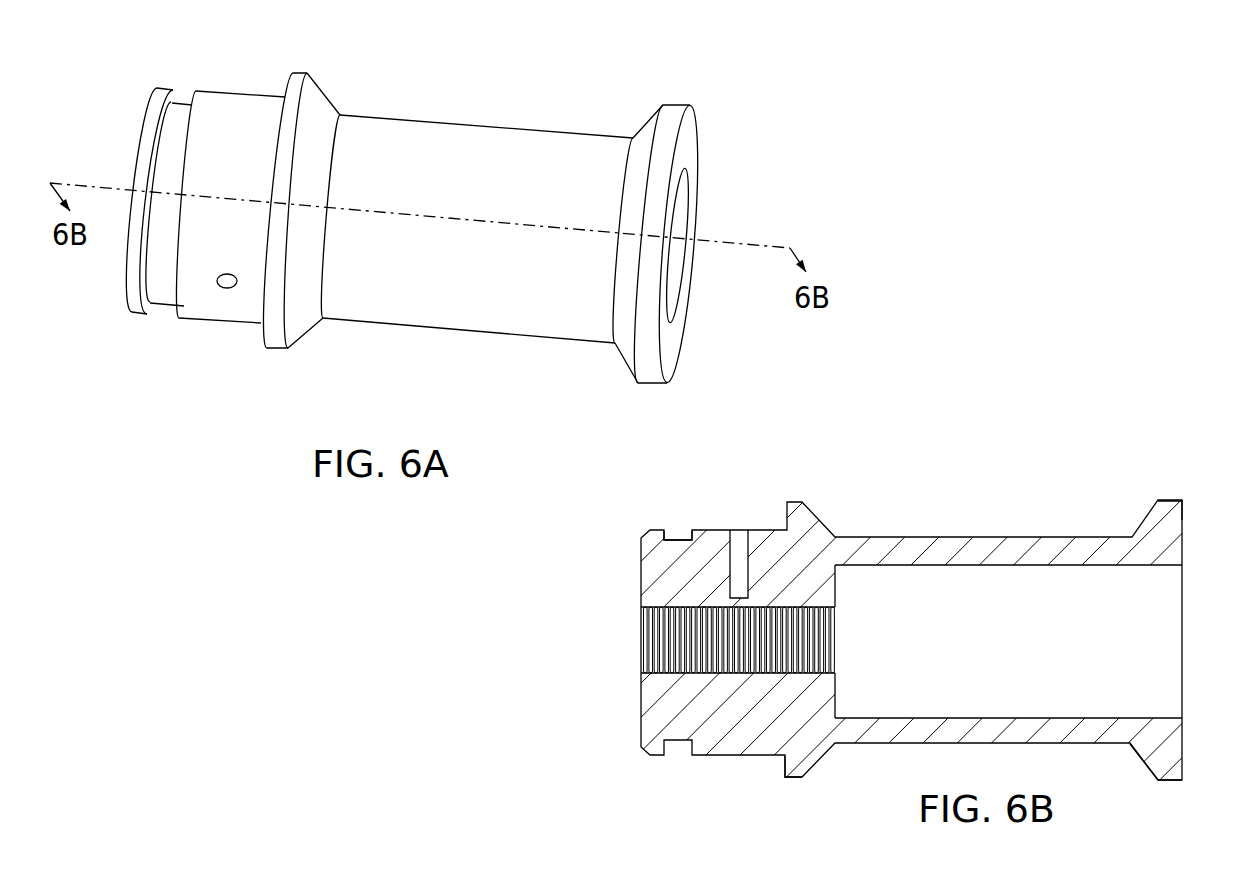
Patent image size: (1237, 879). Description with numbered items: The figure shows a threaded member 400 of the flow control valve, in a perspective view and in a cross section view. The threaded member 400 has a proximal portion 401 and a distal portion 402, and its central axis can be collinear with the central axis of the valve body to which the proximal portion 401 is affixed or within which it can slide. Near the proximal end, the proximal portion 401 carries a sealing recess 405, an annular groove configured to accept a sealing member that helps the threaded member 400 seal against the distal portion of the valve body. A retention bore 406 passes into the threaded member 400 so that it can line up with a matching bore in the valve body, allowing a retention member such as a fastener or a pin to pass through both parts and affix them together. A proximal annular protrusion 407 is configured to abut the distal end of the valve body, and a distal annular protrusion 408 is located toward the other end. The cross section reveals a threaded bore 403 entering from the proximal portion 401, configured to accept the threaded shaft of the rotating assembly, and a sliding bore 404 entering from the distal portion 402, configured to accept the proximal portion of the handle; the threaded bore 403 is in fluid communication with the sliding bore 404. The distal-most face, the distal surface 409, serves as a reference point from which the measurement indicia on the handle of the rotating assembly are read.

In FIG. 6A, the threaded member 400 is at (562, 90).
In FIG. 6A, the proximal portion 401 is at (211, 376).
In FIG. 6A, the distal portion 402 is at (594, 392).
In FIG. 6B, the threaded bore 403 is at (645, 643).
In FIG. 6B, the sliding bore 404 is at (1160, 653).
In FIG. 6A, the sealing recess 405 is at (188, 101).
In FIG. 6B, the sealing recess 405 is at (676, 537).
In FIG. 6B, the retention bore 406 is at (738, 542).
In FIG. 6B, the proximal annular protrusion 407 is at (797, 772).
In FIG. 6B, the distal annular protrusion 408 is at (1153, 757).
In FIG. 6B, the distal surface 409 is at (1184, 515).